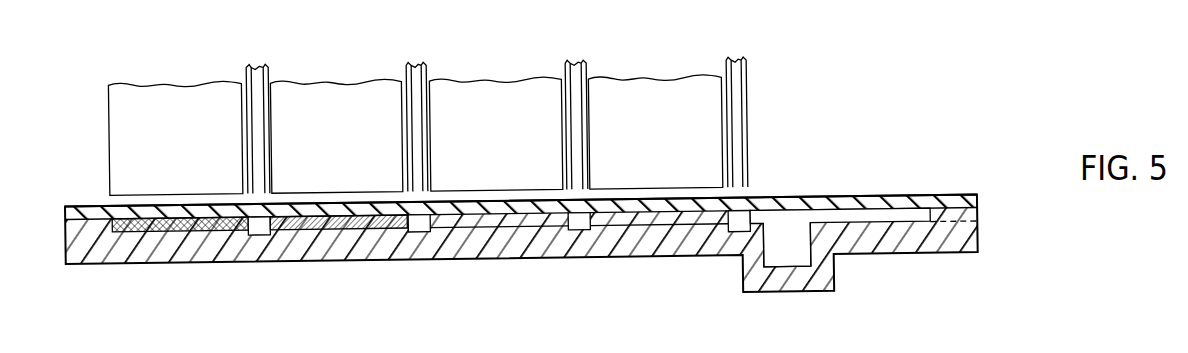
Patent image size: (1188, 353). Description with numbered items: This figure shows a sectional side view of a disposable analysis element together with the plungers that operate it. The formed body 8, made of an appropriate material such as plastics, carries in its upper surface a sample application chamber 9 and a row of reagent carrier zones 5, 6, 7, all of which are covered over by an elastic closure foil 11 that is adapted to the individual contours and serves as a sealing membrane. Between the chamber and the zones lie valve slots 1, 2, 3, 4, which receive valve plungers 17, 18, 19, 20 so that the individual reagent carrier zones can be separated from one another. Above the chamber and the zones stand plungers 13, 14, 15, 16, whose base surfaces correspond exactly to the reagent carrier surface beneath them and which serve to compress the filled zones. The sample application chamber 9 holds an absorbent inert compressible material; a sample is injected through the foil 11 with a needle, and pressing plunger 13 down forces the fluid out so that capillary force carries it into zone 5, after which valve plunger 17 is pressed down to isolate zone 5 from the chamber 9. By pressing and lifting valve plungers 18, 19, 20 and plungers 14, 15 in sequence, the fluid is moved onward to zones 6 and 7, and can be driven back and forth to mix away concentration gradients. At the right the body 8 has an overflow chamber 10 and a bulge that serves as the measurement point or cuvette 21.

The valve slot 1 is at (263, 239).
The valve slot 2 is at (418, 235).
The valve slot 3 is at (577, 237).
The valve slot 4 is at (720, 236).
The reagent carrier zone 5 is at (340, 234).
The reagent carrier zone 6 is at (500, 236).
The reagent carrier zone 7 is at (673, 233).
The formed body 8 is at (947, 259).
The sample application chamber 9 is at (196, 234).
The overflow chamber 10 is at (867, 224).
The elastic closure foil 11 is at (957, 212).
The plunger 13 is at (180, 98).
The plunger 14 is at (335, 92).
The plunger 15 is at (492, 94).
The plunger 16 is at (652, 96).
The valve plunger 17 is at (260, 80).
The valve plunger 18 is at (420, 80).
The valve plunger 19 is at (578, 84).
The valve plunger 20 is at (738, 79).
The cuvette 21 is at (783, 263).